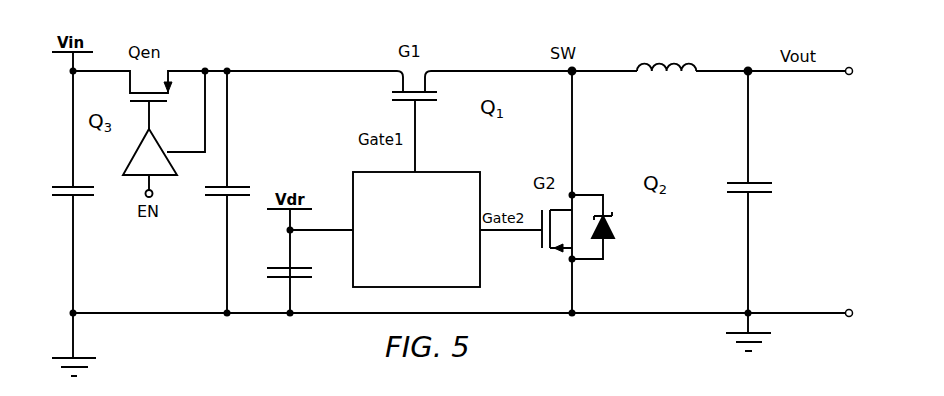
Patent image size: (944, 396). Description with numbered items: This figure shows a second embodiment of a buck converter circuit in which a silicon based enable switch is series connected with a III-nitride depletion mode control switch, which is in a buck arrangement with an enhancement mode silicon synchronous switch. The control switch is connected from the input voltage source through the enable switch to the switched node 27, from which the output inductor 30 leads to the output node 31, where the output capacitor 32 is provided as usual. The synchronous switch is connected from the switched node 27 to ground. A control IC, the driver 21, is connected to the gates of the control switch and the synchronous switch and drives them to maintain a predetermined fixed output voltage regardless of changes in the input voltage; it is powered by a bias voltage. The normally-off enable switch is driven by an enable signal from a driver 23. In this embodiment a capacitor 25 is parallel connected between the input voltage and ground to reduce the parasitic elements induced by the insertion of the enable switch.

The driver 21 is at (453, 170).
The driver 23 is at (137, 147).
The capacitor 25 is at (238, 187).
The switched node 27 is at (572, 72).
The output inductor 30 is at (667, 83).
The output node 31 is at (750, 71).
The output capacitor 32 is at (775, 190).